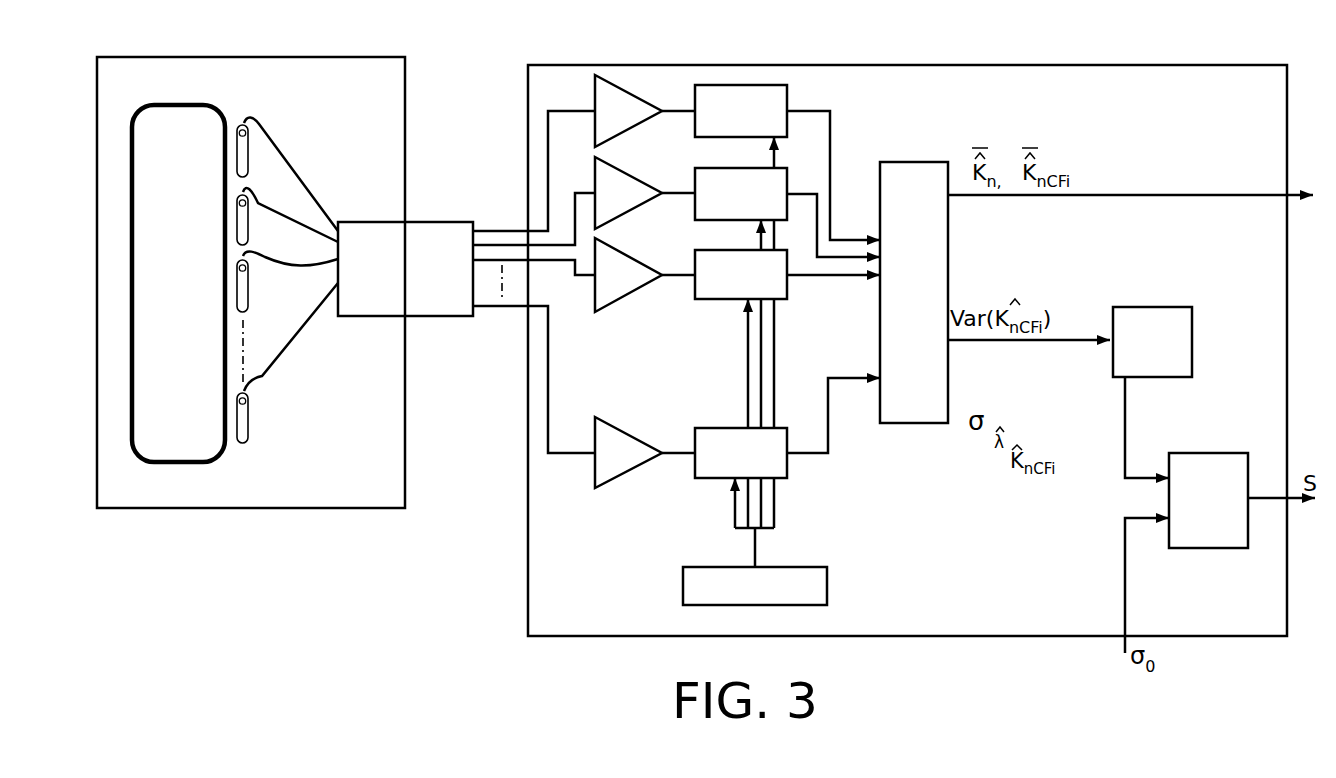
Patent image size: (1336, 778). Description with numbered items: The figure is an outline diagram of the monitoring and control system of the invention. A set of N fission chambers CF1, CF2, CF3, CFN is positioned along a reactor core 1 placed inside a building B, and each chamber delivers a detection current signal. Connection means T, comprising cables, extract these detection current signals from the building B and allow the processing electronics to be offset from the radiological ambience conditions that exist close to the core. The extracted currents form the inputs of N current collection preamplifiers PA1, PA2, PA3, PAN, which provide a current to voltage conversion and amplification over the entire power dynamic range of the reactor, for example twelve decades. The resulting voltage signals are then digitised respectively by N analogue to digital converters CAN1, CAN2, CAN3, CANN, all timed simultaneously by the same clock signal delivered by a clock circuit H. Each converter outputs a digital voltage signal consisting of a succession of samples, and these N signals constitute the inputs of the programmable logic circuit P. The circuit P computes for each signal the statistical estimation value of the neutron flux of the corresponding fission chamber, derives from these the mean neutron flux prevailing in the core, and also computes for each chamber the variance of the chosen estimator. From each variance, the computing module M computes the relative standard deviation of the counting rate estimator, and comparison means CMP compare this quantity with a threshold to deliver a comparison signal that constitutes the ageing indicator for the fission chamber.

The reactor core 1 is at (172, 113).
The building B is at (123, 498).
The fission chamber CF1 is at (245, 148).
The fission chamber CF2 is at (245, 225).
The fission chamber CF3 is at (245, 293).
The fission chamber CFN is at (245, 425).
The connection means T is at (445, 232).
The current collection preamplifier PA1 is at (622, 102).
The current collection preamplifier PA2 is at (597, 168).
The current collection preamplifier PA3 is at (615, 300).
The current collection preamplifier PAN is at (615, 463).
The analogue to digital converter CAN1 is at (732, 100).
The analogue to digital converter CAN2 is at (730, 180).
The analogue to digital converter CAN3 is at (725, 262).
The analogue to digital converter CANN is at (708, 463).
The programmable logic circuit P is at (898, 410).
The computing module M is at (1145, 320).
The comparison means CMP is at (1216, 468).
The clock circuit H is at (818, 592).